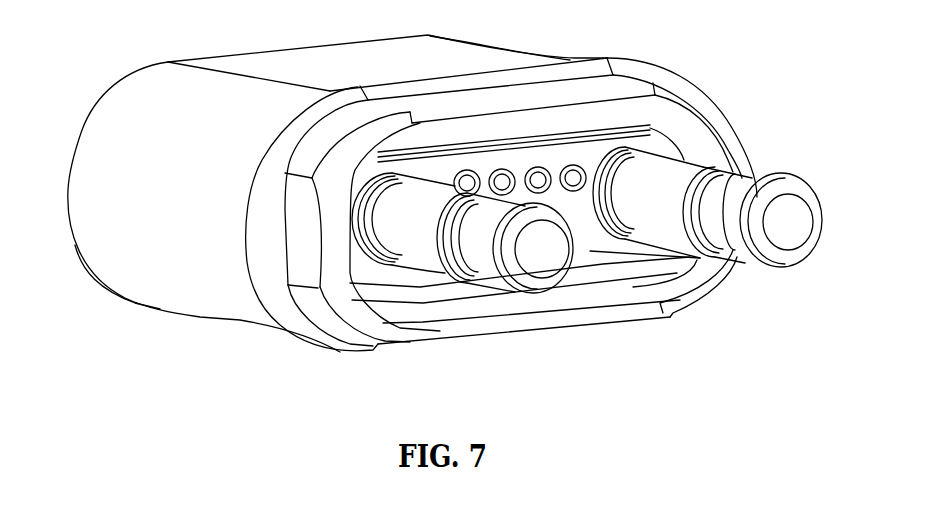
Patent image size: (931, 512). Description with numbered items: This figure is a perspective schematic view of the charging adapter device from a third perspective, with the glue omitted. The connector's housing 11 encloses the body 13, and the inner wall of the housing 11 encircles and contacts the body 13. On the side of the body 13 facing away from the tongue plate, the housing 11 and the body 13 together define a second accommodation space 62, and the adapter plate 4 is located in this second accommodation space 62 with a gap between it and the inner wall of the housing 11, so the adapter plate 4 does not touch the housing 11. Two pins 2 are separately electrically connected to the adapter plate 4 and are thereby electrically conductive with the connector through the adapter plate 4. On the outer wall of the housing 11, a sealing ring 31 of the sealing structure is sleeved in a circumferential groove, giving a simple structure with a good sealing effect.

The housing 11 is at (458, 59).
The sealing ring 31 is at (268, 258).
The second accommodation space 62 is at (683, 148).
The body 13 is at (417, 283).
The adapter plate 4 is at (592, 245).
The pin 2 is at (737, 192).